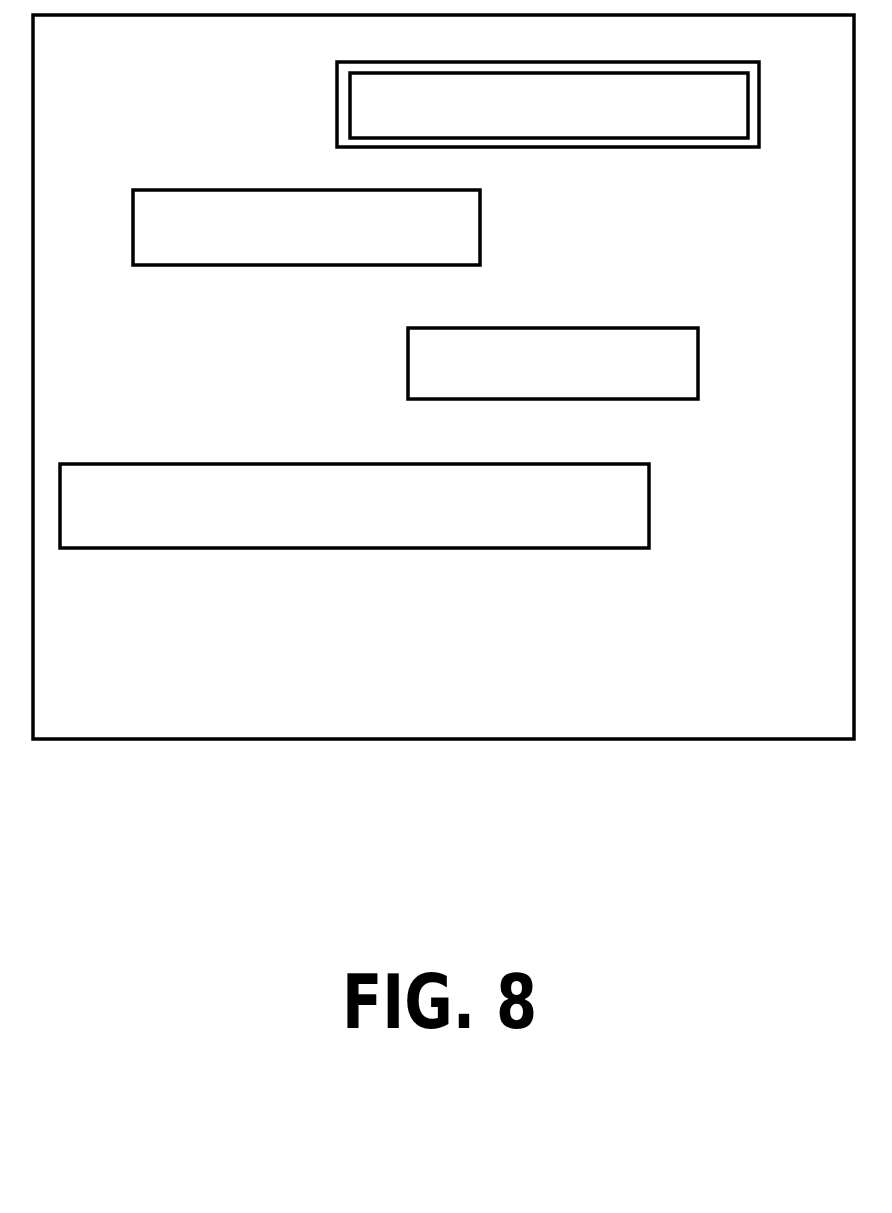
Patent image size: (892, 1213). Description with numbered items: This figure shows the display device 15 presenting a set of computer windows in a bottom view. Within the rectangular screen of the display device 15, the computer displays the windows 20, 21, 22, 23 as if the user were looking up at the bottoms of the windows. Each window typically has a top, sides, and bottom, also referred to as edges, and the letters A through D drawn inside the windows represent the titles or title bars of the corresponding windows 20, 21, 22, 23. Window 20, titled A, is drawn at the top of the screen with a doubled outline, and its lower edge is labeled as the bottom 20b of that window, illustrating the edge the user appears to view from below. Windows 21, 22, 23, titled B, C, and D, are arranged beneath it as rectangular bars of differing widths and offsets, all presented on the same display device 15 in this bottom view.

The display device 15 is at (402, 739).
The window 20 is at (490, 135).
The bottom 20b is at (382, 101).
The window 21 is at (480, 228).
The window 22 is at (640, 328).
The window 23 is at (649, 495).